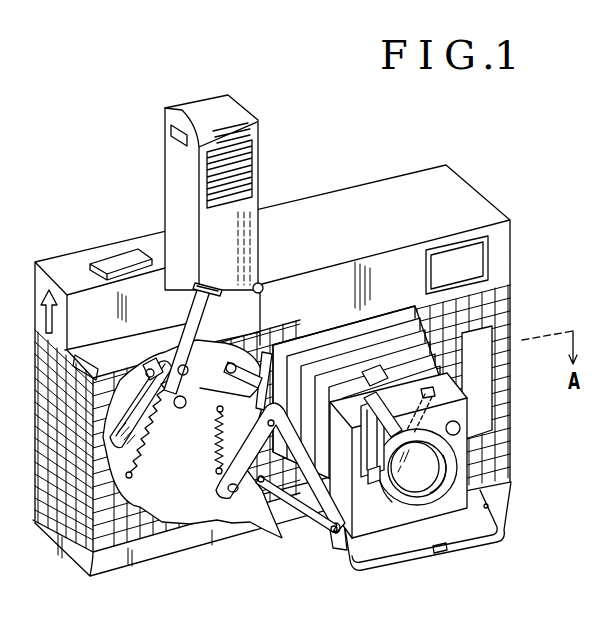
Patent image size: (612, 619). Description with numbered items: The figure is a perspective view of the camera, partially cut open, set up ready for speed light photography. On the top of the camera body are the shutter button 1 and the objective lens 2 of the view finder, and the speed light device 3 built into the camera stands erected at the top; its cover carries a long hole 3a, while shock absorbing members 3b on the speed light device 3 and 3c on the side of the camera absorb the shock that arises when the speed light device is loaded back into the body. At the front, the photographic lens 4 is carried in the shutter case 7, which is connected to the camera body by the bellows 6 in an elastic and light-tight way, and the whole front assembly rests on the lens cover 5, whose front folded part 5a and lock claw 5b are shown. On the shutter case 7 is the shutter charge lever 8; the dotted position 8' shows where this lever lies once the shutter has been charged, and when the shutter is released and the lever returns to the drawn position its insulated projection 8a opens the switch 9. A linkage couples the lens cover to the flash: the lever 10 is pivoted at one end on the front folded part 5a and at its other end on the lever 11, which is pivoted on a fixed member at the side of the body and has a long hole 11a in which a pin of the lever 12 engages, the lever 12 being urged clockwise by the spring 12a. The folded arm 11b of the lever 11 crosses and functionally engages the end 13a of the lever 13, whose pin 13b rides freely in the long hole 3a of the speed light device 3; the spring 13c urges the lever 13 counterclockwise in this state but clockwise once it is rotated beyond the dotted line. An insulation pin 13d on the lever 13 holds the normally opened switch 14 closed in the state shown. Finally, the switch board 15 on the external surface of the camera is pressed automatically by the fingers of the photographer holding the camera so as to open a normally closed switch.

The shutter button 1 is at (118, 263).
The objective lens in the view finder 2 is at (468, 272).
The speed light device 3 is at (233, 114).
The long hole 3a is at (228, 290).
The shock absorbing member 3b is at (172, 133).
The shock absorbing member 3c is at (94, 360).
The photographic lens 4 is at (428, 453).
The lens cover 5 is at (399, 567).
The front folded part 5a is at (343, 553).
The lock claw 5b is at (433, 545).
The bellows 6 is at (336, 353).
The shutter case 7 is at (448, 398).
The shutter charge lever 8 is at (382, 362).
The position of shutter charge lever (charged) 8' is at (446, 400).
The insulated projection 8a is at (378, 470).
The switch 9 is at (368, 446).
The lever 10 is at (323, 507).
The lever 11 is at (265, 408).
The long hole 11a is at (220, 465).
The folded arm 11b is at (272, 378).
The lever 12 is at (247, 490).
The spring 12a is at (225, 490).
The lever 13 is at (198, 328).
The one end of lever 13 13a is at (211, 397).
The pin 13b is at (208, 286).
The spring 13c is at (150, 450).
The insulation pin 13d is at (148, 368).
The normally opened switch 14 is at (141, 449).
The switch board 15 is at (486, 350).